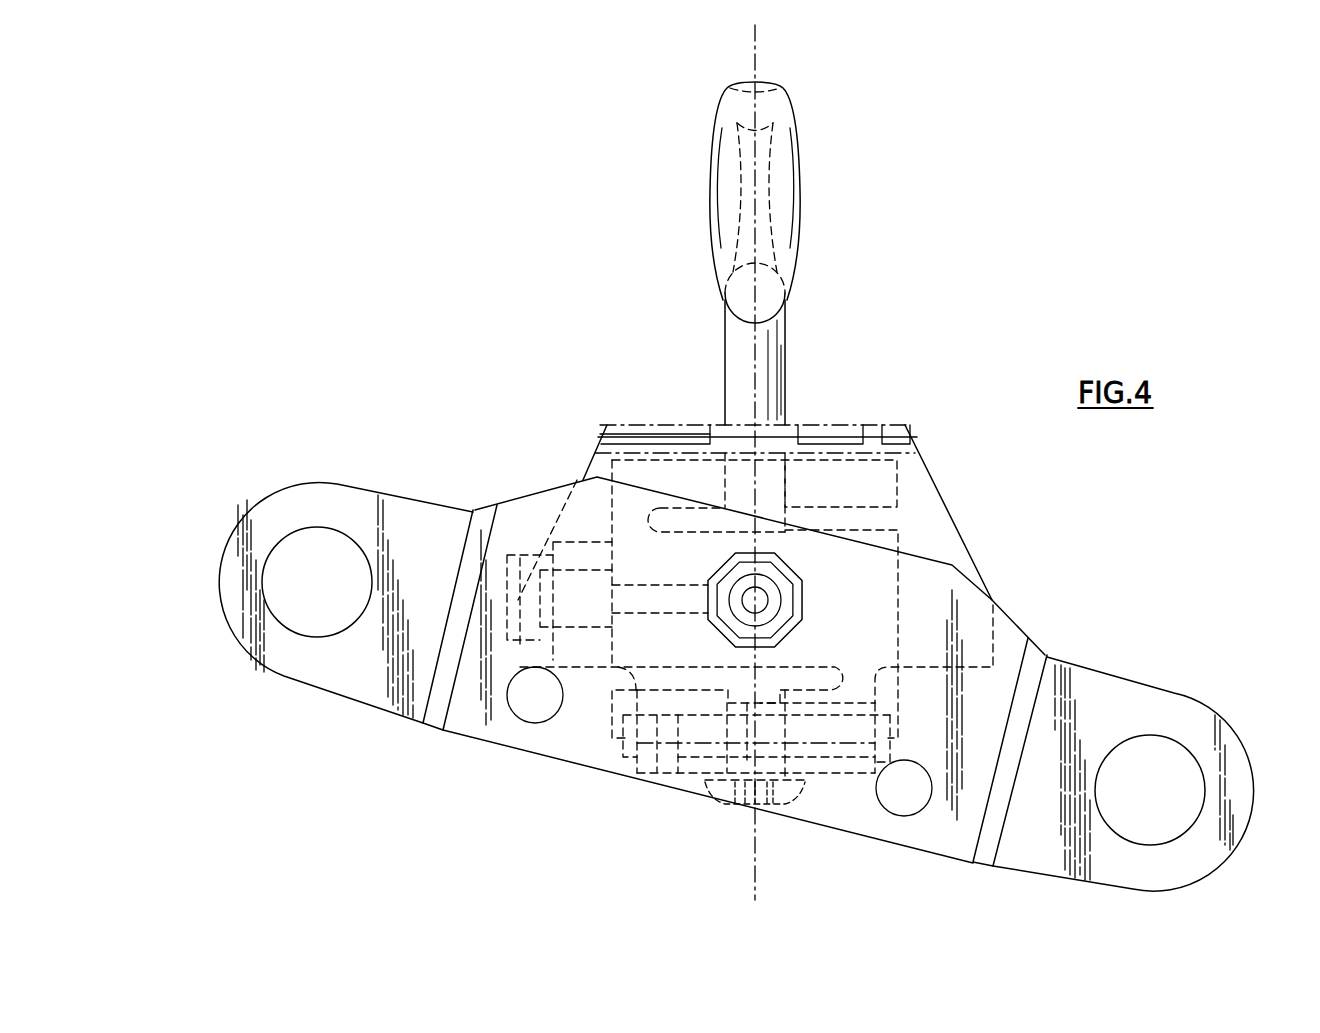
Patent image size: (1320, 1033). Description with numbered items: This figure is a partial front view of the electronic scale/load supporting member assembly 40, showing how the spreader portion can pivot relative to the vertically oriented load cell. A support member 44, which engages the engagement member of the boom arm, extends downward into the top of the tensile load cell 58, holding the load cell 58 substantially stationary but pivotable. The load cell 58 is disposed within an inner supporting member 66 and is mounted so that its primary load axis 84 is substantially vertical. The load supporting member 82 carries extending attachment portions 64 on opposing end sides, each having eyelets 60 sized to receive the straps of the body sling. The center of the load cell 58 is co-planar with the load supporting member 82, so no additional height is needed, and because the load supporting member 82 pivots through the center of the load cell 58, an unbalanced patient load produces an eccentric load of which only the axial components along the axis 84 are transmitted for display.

The electronic scale/load supporting member assembly 40 is at (400, 252).
The support member 44 is at (738, 352).
The tensile load cell 58 is at (650, 475).
The eyelets 60 is at (285, 560).
The extending attachment portions 64 is at (238, 617).
The inner supporting member 66 is at (925, 510).
The load supporting member 82 is at (541, 510).
The primary load axis 84 is at (749, 40).